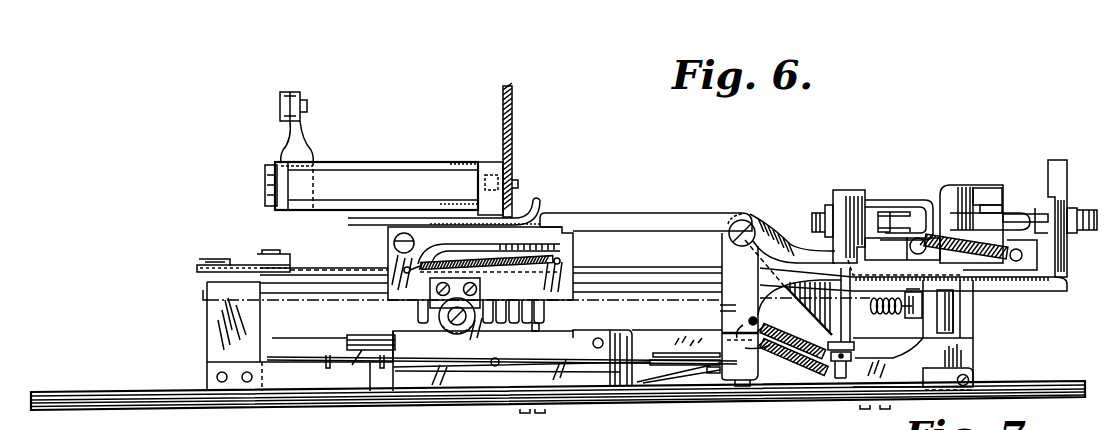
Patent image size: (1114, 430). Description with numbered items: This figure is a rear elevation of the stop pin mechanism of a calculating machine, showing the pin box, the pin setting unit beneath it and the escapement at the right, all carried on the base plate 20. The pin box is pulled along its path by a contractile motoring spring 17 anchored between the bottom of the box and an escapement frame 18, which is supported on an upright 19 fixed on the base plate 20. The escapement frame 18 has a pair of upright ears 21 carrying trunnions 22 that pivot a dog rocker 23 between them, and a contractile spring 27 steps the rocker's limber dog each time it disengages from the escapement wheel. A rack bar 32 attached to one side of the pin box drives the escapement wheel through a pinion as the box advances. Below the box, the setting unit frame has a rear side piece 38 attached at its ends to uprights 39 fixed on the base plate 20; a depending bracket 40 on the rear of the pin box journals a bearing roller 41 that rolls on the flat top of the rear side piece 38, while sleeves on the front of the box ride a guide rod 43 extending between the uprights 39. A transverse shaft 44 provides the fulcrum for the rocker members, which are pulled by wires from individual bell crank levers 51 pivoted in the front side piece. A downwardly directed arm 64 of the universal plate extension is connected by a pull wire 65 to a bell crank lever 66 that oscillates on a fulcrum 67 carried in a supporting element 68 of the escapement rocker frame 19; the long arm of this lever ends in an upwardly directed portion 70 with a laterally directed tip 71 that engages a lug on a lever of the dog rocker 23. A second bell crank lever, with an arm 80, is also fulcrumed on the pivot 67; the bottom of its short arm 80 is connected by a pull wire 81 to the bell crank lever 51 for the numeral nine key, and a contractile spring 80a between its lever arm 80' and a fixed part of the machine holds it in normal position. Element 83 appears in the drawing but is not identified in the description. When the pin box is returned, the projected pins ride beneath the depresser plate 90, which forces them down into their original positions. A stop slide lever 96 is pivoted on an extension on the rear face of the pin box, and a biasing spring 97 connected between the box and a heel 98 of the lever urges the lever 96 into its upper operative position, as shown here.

The contractile motoring spring 17 is at (880, 314).
The escapement frame 18 is at (1032, 282).
The upright 19 is at (968, 322).
The base plate 20 is at (380, 401).
The upright ears 21 is at (856, 190).
The trunnions 22 is at (815, 212).
The dog rocker 23 is at (992, 270).
The contractile spring 27 is at (975, 237).
The rack bar 32 is at (659, 273).
The rear side piece 38 is at (467, 378).
The uprights 39 is at (832, 365).
The depending bracket 40 is at (482, 299).
The bearing roller 41 is at (452, 333).
The guide rod 43 is at (612, 285).
The shaft 44 is at (498, 364).
The bell crank lever 51 is at (334, 338).
The arm 64 is at (634, 340).
The pull wire 65 is at (645, 375).
The bell crank lever 66 is at (750, 352).
The fulcrum 67 is at (752, 222).
The supporting element 68 is at (780, 238).
The upwardly directed portion 70 is at (945, 192).
The laterally directed tip 71 is at (1000, 192).
The arm of second bell crank lever 80 is at (781, 306).
The contractile spring 80a is at (765, 303).
The lever arm 80' is at (701, 321).
The pull wire 81 is at (600, 366).
The spring 83 is at (800, 368).
The depresser plate 90 is at (526, 210).
The stop slide lever 96 is at (619, 213).
The biasing spring 97 is at (478, 259).
The heel 98 is at (388, 251).